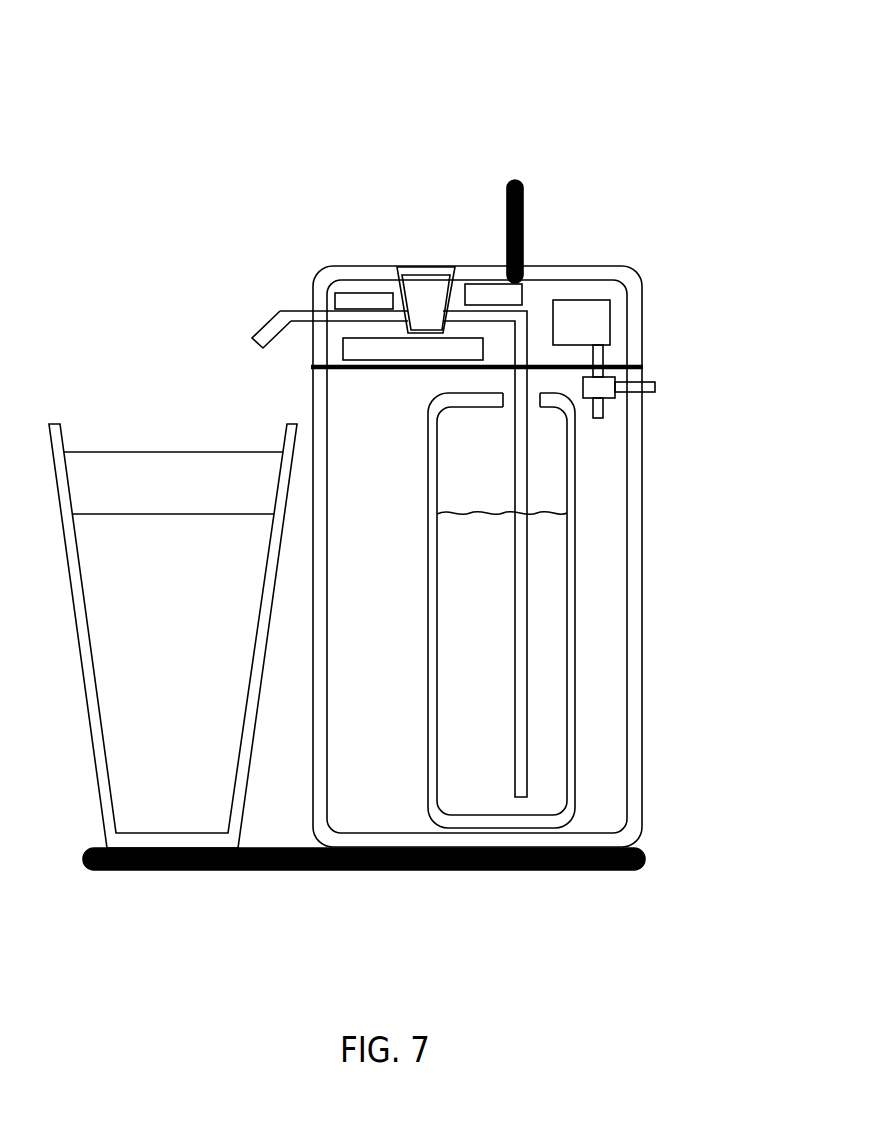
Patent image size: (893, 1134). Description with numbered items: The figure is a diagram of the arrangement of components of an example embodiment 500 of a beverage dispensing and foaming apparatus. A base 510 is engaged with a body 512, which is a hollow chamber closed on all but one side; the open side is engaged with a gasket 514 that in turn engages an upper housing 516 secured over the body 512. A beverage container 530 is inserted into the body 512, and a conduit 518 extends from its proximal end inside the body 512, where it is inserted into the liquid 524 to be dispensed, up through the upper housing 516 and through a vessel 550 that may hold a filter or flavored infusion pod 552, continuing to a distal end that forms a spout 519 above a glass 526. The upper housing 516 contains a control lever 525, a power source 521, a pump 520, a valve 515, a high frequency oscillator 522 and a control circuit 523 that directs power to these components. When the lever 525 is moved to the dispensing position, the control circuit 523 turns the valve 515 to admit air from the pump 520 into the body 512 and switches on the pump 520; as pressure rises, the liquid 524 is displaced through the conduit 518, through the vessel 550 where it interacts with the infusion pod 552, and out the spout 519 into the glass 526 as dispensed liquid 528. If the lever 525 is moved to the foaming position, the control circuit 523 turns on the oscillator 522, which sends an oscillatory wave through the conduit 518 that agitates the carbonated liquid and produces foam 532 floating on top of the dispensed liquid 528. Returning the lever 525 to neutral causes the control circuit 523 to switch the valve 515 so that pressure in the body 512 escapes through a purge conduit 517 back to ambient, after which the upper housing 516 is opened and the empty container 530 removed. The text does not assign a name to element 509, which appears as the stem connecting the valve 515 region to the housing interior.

The example embodiment 500 is at (97, 53).
The valve stem 509 is at (598, 372).
The base 510 is at (645, 858).
The body 512 is at (530, 515).
The gasket 514 is at (652, 388).
The valve 515 is at (603, 412).
The upper housing 516 is at (628, 280).
The purge conduit 517 is at (600, 392).
The conduit 518 is at (431, 505).
The spout 519 is at (248, 347).
The pump 520 is at (569, 318).
The power source 521 is at (362, 348).
The oscillator 522 is at (357, 300).
The control circuit 523 is at (482, 290).
The liquid 524 is at (543, 614).
The control lever 525 is at (512, 180).
The glass 526 is at (148, 583).
The dispensed liquid 528 is at (110, 570).
The beverage container 530 is at (570, 488).
The foam 532 is at (157, 480).
The vessel 550 is at (393, 243).
The infusion pod 552 is at (437, 300).